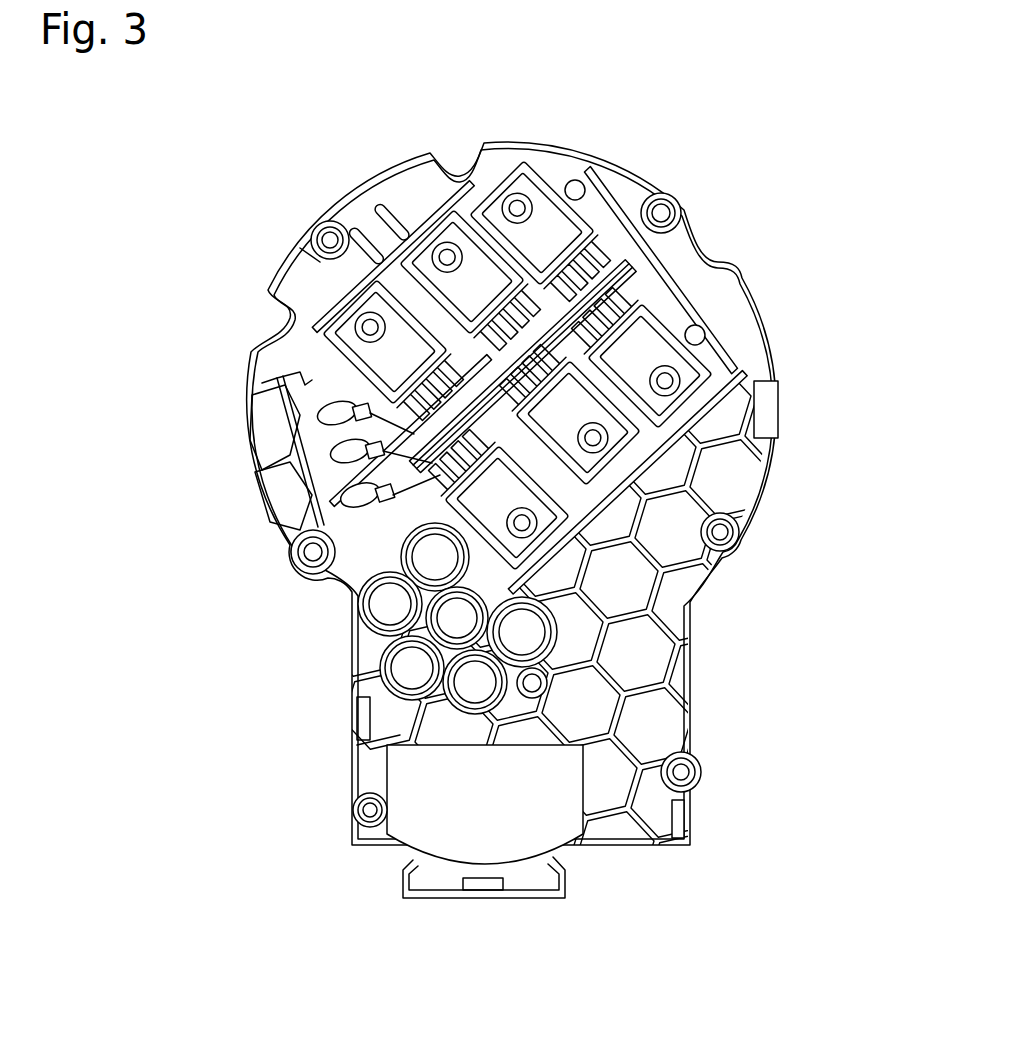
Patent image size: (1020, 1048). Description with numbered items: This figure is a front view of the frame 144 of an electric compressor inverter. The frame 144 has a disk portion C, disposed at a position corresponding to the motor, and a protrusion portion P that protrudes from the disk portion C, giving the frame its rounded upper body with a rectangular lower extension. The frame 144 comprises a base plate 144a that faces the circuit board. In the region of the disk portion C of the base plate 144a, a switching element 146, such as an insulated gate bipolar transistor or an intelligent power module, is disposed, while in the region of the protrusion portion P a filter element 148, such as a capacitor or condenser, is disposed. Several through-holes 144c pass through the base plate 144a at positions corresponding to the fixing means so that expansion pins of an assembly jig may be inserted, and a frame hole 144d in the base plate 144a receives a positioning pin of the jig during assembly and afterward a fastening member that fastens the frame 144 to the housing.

The frame 144 is at (838, 134).
The base plate 144a is at (740, 304).
The through-hole 144c is at (307, 250).
The frame hole 144d is at (742, 535).
The switching element 146 is at (541, 200).
The filter element 148 is at (378, 600).
The disk portion C is at (238, 385).
The protrusion portion P is at (342, 752).